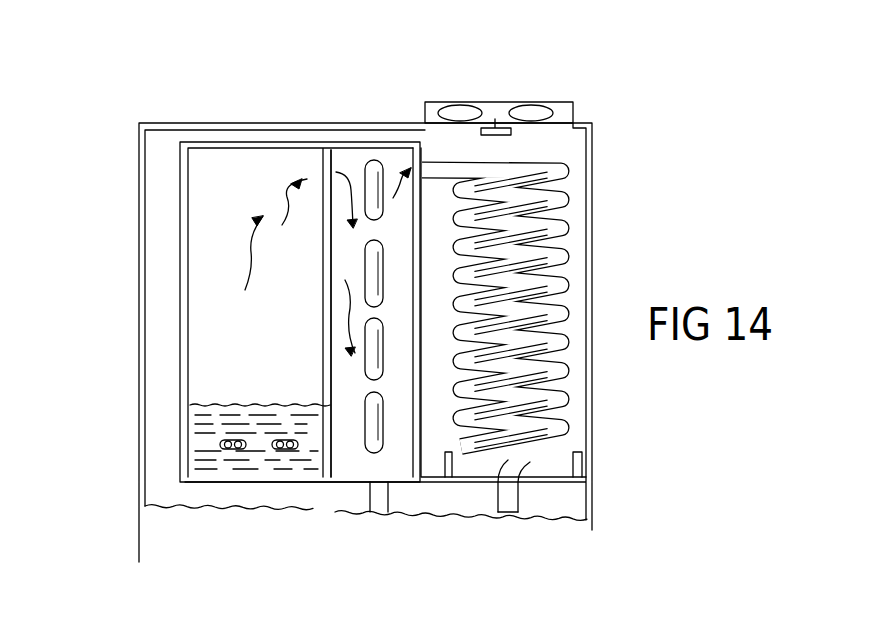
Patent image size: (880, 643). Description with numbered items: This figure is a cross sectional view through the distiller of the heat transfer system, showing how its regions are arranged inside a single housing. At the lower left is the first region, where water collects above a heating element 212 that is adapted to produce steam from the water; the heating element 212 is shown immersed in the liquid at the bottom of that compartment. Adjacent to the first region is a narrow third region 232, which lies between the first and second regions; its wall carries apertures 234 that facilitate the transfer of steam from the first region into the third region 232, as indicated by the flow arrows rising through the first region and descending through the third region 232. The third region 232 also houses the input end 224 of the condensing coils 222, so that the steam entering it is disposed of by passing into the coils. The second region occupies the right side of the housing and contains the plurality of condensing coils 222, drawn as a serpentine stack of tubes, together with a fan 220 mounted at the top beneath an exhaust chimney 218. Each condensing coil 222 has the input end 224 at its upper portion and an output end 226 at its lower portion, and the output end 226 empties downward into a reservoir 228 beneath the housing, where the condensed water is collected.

The heating element 212 is at (220, 453).
The exhaust chimney 218 is at (505, 101).
The fan 220 is at (537, 112).
The condensing coils 222 is at (570, 183).
The input end 224 is at (433, 160).
The output end 226 is at (518, 497).
The reservoir 228 is at (330, 510).
The third region 232 is at (347, 152).
The apertures 234 is at (322, 171).